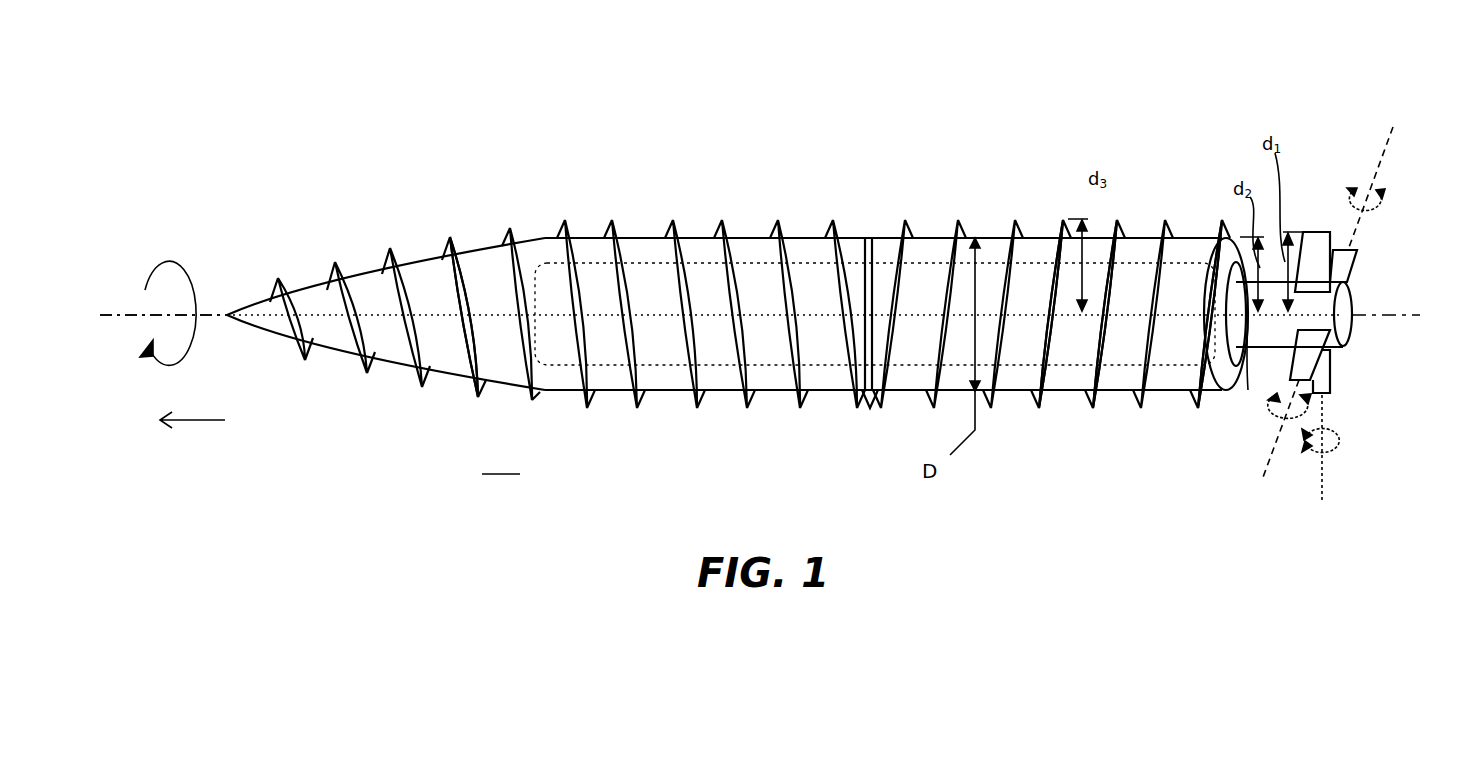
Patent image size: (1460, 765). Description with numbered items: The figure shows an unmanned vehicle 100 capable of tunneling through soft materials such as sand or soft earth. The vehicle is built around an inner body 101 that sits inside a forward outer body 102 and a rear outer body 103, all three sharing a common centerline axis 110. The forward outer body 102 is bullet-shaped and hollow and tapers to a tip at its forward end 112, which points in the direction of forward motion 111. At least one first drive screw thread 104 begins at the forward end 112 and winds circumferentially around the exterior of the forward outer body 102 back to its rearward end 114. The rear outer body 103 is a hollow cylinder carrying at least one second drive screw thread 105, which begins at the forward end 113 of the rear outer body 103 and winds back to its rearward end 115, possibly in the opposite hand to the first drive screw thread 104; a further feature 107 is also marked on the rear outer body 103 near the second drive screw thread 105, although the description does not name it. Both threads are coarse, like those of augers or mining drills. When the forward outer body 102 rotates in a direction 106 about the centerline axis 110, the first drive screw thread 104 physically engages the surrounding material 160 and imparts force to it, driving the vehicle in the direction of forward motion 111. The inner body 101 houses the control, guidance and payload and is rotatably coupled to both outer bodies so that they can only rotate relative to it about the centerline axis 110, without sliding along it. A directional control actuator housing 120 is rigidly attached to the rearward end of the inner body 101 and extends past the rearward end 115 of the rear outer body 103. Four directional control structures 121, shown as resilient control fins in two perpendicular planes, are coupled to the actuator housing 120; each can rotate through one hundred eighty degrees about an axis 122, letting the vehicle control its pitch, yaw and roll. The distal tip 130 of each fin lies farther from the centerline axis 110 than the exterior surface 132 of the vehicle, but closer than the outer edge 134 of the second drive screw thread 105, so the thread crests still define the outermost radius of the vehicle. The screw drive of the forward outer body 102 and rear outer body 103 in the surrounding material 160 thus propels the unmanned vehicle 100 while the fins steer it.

The unmanned vehicle 100 is at (1020, 86).
The inner body 101 is at (925, 262).
The forward outer body 102 is at (758, 214).
The rear outer body 103 is at (1035, 207).
The first drive screw thread 104 is at (497, 234).
The second drive screw thread 105 is at (1128, 242).
The direction of rotation 106 is at (167, 262).
The thread root 107 is at (1138, 253).
The centerline axis 110 is at (115, 315).
The direction of forward motion 111 is at (205, 423).
The forward end 112 is at (227, 313).
The forward end 113 is at (870, 396).
The rearward end 114 is at (867, 240).
The rearward end 115 is at (1240, 372).
The directional control actuator housing 120 is at (1353, 318).
The directional control structure 121 is at (1357, 262).
The axis 122 is at (1360, 180).
The distal tip 130 is at (1316, 232).
The exterior surface 132 is at (1198, 236).
The outer edge 134 is at (1068, 258).
The surrounding material 160 is at (503, 460).